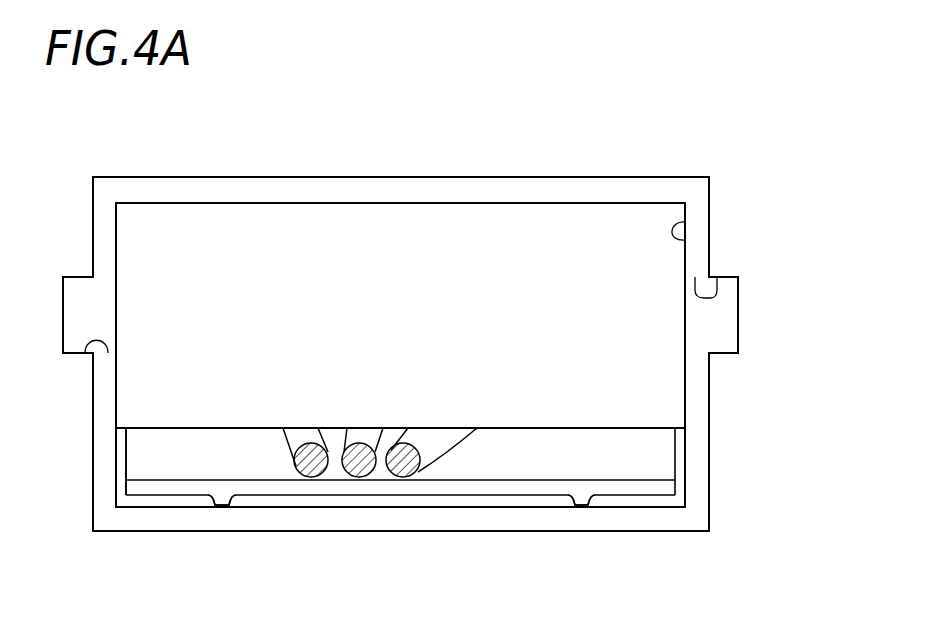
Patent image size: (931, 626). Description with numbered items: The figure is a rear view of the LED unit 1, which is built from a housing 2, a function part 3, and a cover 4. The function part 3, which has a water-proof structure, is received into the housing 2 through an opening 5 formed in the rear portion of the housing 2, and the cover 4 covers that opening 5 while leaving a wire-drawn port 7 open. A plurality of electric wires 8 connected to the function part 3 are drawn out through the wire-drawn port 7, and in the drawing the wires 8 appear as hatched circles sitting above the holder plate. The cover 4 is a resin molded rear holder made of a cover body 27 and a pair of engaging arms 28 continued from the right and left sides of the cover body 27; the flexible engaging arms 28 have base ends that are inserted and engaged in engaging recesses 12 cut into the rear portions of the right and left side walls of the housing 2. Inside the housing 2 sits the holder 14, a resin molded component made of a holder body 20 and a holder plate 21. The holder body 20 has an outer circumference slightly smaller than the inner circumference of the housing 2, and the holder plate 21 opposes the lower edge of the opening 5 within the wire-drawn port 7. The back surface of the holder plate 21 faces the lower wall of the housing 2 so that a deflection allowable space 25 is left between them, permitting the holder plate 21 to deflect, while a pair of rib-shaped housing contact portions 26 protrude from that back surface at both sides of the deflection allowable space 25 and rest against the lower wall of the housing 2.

The LED unit 1 is at (556, 168).
The housing 2 is at (349, 190).
The function part 3 is at (248, 232).
The cover 4 is at (167, 225).
The opening 5 is at (680, 240).
The wire-drawn port 7 is at (200, 448).
The electric wires 8 is at (365, 437).
The engaging recesses 12 is at (83, 353).
The holder 14 is at (138, 445).
The holder body 20 is at (655, 448).
The holder plate 21 is at (665, 485).
The deflection allowable space 25 is at (119, 485).
The housing contact portions 26 is at (220, 506).
The cover body 27 is at (466, 225).
The engaging arms 28 is at (75, 283).